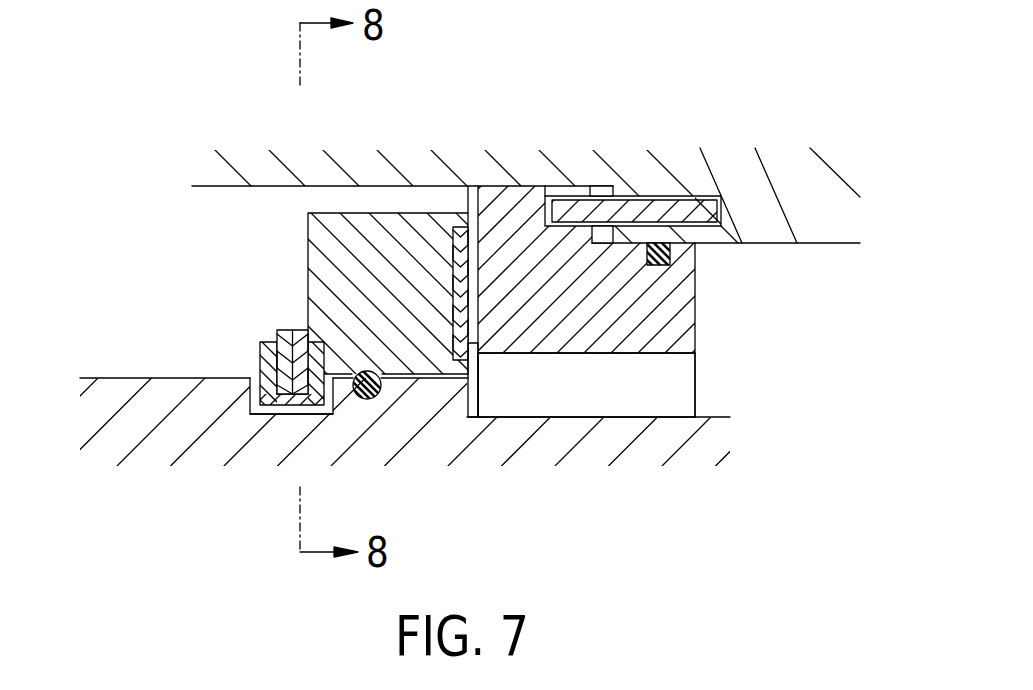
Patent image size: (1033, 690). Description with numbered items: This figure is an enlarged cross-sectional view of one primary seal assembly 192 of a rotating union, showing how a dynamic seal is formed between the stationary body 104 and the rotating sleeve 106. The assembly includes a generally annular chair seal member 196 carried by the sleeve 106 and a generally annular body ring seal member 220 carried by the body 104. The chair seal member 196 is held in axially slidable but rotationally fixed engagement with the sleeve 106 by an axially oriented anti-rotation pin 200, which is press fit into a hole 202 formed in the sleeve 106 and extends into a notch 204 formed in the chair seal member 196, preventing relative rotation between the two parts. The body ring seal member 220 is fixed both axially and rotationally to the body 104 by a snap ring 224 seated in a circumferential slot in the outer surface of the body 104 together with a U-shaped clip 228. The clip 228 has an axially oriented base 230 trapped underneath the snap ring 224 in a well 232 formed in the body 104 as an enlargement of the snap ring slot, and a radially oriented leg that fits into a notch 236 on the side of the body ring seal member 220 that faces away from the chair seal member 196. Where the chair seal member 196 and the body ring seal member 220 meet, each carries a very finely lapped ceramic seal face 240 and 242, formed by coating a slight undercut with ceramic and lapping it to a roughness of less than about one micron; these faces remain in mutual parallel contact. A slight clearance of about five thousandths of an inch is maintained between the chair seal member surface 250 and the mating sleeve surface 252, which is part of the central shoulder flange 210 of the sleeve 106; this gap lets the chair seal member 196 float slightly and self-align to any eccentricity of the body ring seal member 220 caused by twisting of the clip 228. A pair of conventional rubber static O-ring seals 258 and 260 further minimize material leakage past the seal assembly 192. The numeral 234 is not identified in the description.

The body 104 is at (70, 488).
The sleeve 106 is at (788, 142).
The primary seal assembly 192 is at (528, 500).
The chair seal member 196 is at (652, 353).
The anti-rotation pin 200 is at (569, 202).
The hole 202 is at (680, 196).
The notch 204 is at (552, 196).
The central shoulder flange 210 is at (820, 243).
The body ring seal member 220 is at (367, 273).
The snap ring 224 is at (275, 348).
The U-shaped clip 228 is at (220, 333).
The base 230 is at (245, 443).
The well 232 is at (285, 459).
The seal ring 234 is at (286, 423).
The notch 236 is at (283, 318).
The ceramic seal face 240 is at (463, 226).
The ceramic seal face 242 is at (473, 236).
The chair seal member surface 250 is at (600, 247).
The sleeve surface 252 is at (697, 243).
The static O-ring seal 258 is at (424, 424).
The static O-ring seal 260 is at (667, 265).